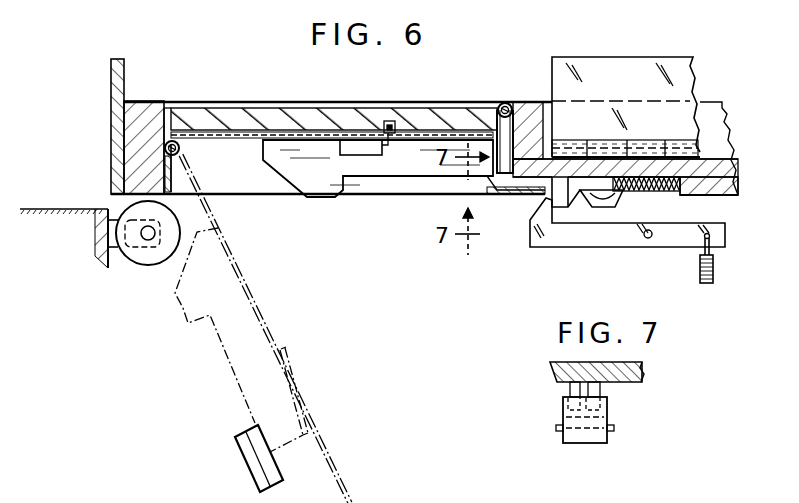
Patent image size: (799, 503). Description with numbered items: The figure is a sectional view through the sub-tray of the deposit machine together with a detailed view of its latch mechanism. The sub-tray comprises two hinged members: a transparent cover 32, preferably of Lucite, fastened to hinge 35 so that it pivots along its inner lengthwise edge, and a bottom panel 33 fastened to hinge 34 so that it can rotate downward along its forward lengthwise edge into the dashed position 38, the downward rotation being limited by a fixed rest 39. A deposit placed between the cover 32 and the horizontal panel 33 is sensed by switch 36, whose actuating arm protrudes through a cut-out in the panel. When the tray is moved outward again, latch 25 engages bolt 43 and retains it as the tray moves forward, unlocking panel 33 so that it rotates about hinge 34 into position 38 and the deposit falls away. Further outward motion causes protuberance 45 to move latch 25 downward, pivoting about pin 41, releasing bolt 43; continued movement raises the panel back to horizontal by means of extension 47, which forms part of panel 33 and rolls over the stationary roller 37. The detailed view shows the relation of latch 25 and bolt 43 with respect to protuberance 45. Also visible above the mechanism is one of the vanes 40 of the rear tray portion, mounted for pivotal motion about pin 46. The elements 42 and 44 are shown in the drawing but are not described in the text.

In FIG. 6, the latch 25 is at (613, 246).
In FIG. 7, the latch 25 is at (590, 444).
In FIG. 6, the transparent cover 32 is at (336, 102).
In FIG. 6, the bottom panel 33 is at (319, 174).
In FIG. 6, the hinge 34 is at (186, 142).
In FIG. 6, the hinge 35 is at (502, 104).
In FIG. 6, the switch 36 is at (378, 155).
In FIG. 6, the stationary roller 37 is at (148, 266).
In FIG. 6, the rotated position of panel 38 is at (262, 328).
In FIG. 6, the fixed rest 39 is at (279, 478).
In FIG. 6, the vane 40 is at (622, 57).
In FIG. 6, the pin 41 is at (648, 240).
In FIG. 7, the pin 41 is at (616, 428).
In FIG. 6, the spring pin 42 is at (714, 278).
In FIG. 6, the bolt 43 is at (566, 208).
In FIG. 7, the bolt 43 is at (603, 388).
In FIG. 6, the spring 44 is at (672, 194).
In FIG. 6, the protuberance 45 is at (610, 208).
In FIG. 7, the protuberance 45 is at (566, 388).
In FIG. 6, the pin 46 is at (700, 150).
In FIG. 6, the extension 47 is at (334, 200).